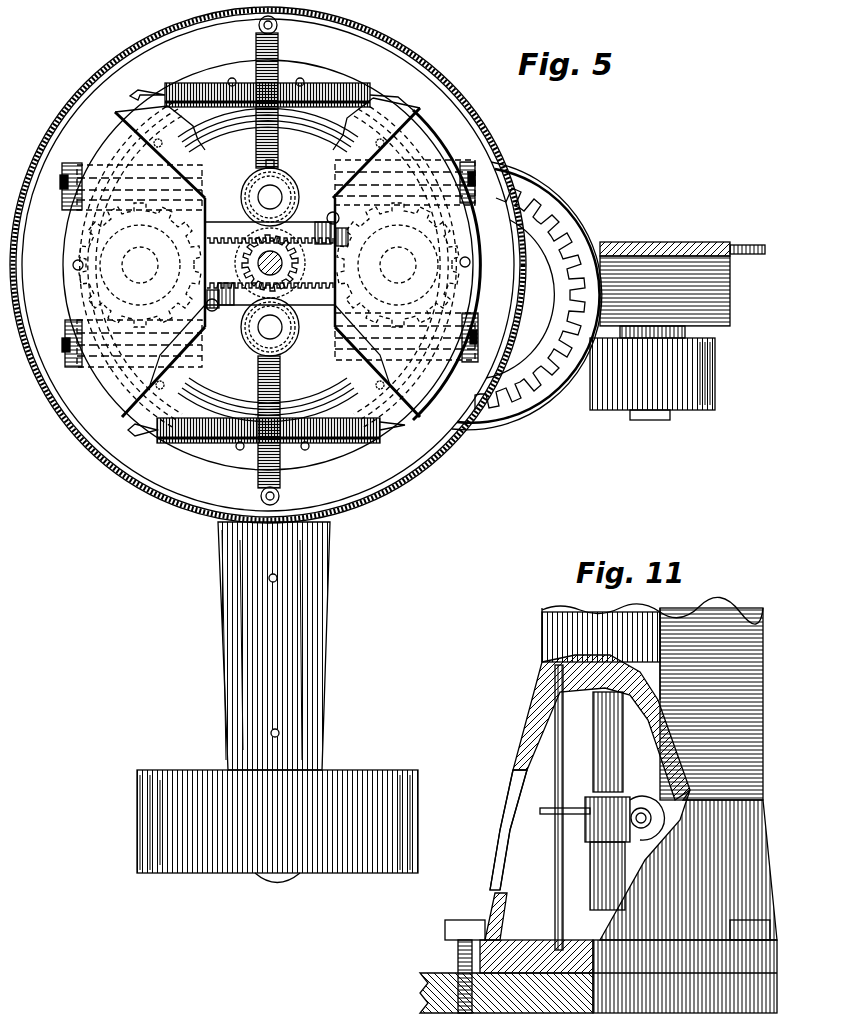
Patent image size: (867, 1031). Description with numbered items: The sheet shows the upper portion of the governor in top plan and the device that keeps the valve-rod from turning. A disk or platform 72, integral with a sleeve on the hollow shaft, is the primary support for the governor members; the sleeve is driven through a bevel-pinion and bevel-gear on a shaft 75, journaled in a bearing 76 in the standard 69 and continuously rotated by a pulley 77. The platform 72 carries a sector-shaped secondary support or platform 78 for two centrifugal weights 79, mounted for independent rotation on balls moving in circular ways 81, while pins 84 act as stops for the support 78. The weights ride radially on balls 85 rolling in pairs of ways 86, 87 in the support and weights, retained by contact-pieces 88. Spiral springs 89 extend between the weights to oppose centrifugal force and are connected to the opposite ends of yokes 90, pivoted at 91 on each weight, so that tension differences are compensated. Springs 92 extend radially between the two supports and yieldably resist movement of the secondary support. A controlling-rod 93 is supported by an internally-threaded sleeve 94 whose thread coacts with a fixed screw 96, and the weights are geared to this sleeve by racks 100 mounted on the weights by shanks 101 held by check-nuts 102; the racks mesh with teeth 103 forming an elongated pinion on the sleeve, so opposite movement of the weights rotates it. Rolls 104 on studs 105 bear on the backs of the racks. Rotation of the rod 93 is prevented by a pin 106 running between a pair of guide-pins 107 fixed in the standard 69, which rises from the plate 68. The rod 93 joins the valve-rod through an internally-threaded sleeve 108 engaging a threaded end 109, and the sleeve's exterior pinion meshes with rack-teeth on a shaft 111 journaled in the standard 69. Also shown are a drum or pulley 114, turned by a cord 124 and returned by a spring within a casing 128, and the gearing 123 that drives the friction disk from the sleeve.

In FIG. 5, the disk or platform 72 is at (470, 141).
In FIG. 5, the shaft 75 is at (281, 880).
In FIG. 5, the bearing 76 is at (326, 618).
In FIG. 5, the pulley 77 is at (185, 874).
In FIG. 5, the secondary support or platform 78 is at (378, 91).
In FIG. 5, the centrifugal members or weights 79 is at (128, 410).
In FIG. 5, the circular way 81 is at (340, 392).
In FIG. 5, the pins 84 is at (232, 78).
In FIG. 5, the balls 85 is at (96, 210).
In FIG. 5, the ways 86 is at (62, 178).
In FIG. 5, the ways 87 is at (424, 140).
In FIG. 5, the contact-pieces 88 is at (75, 168).
In FIG. 5, the springs 89 is at (188, 84).
In FIG. 5, the yokes 90 is at (407, 109).
In FIG. 5, the pivot 91 is at (471, 263).
In FIG. 5, the springs 92 is at (279, 33).
In FIG. 5, the internally-threaded sleeve 94 is at (307, 290).
In FIG. 5, the screw 96 is at (287, 266).
In FIG. 5, the racks 100 is at (221, 236).
In FIG. 5, the shanks 101 is at (236, 309).
In FIG. 5, the check-nuts 102 is at (328, 222).
In FIG. 5, the teeth 103 is at (257, 266).
In FIG. 5, the rolls 104 is at (262, 170).
In FIG. 5, the studs 105 is at (272, 196).
In FIG. 5, the shaft 111 is at (343, 247).
In FIG. 11, the shaft 111 is at (641, 808).
In FIG. 5, the drum or pulley 114 is at (699, 249).
In FIG. 5, the gearing 123 is at (522, 386).
In FIG. 5, the flexible member or cord 124 is at (762, 252).
In FIG. 5, the casing 128 is at (713, 381).
In FIG. 11, the plate 68 is at (420, 994).
In FIG. 11, the standard 69 is at (530, 735).
In FIG. 11, the controlling-rod 93 is at (597, 741).
In FIG. 11, the pin 106 is at (517, 799).
In FIG. 11, the guide-pins 107 is at (556, 890).
In FIG. 11, the internally-threaded sleeve 108 is at (597, 871).
In FIG. 11, the threaded end 109 is at (590, 803).